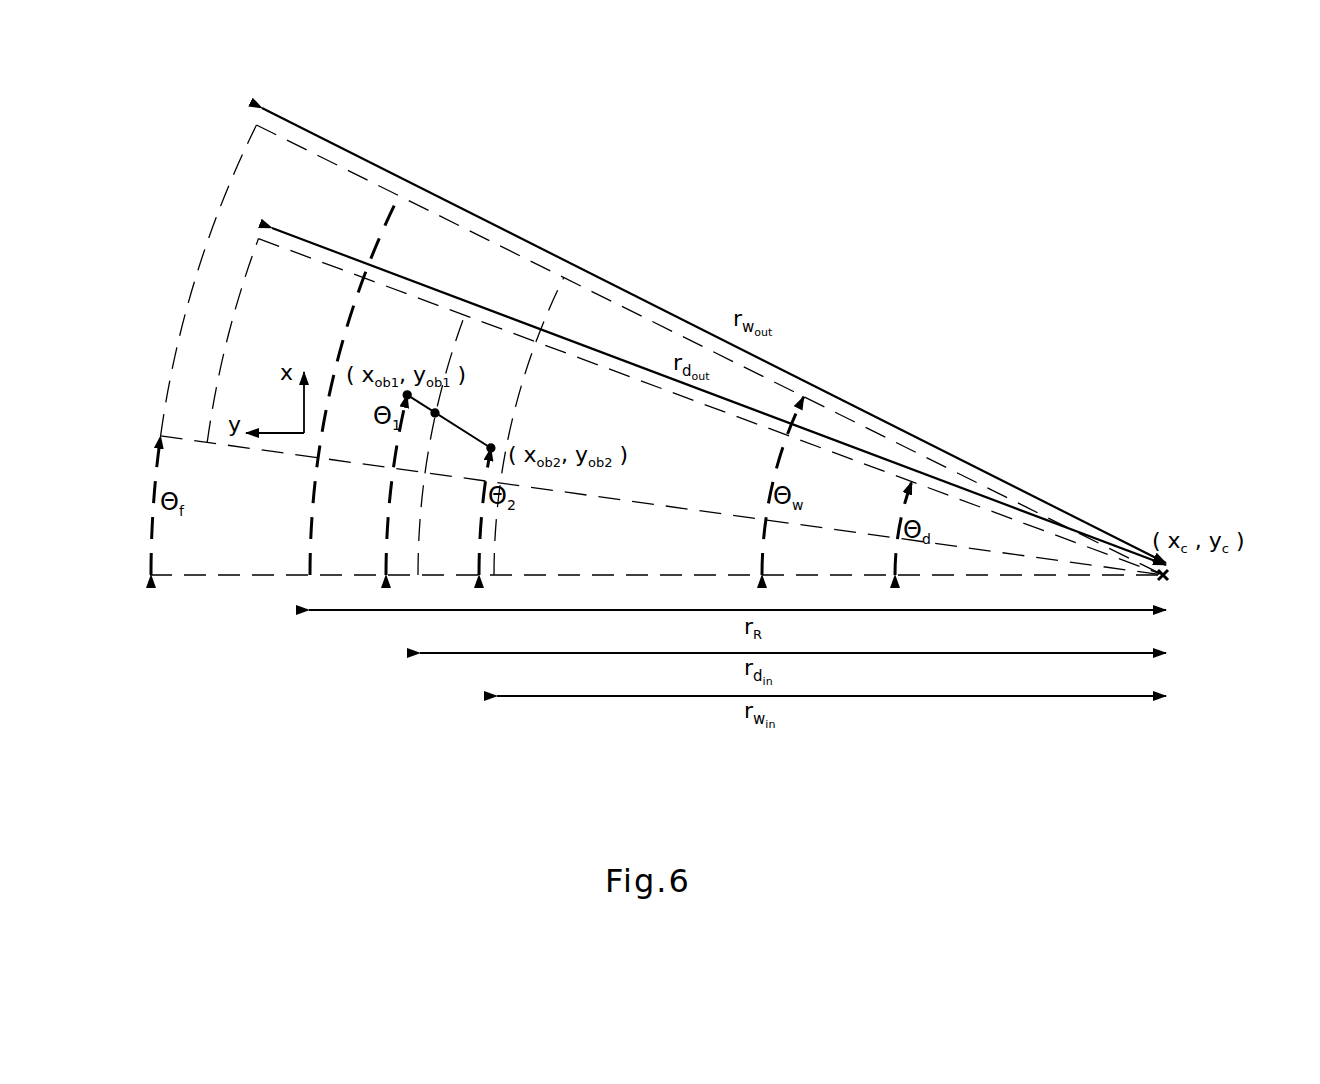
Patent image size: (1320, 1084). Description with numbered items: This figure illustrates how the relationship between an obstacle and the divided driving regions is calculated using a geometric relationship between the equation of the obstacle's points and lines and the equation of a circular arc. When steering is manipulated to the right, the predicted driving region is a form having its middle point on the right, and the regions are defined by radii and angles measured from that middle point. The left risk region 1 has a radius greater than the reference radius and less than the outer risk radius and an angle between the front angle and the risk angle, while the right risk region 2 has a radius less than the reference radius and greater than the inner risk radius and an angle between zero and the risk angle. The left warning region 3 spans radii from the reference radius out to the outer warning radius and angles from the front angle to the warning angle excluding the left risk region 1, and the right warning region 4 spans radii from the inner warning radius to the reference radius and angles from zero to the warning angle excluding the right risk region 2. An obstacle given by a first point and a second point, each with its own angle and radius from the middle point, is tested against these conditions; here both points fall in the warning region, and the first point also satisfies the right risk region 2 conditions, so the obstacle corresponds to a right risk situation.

The left risk region 1 is at (303, 385).
The right risk region 2 is at (422, 445).
The left warning region 3 is at (224, 280).
The right warning region 4 is at (517, 416).